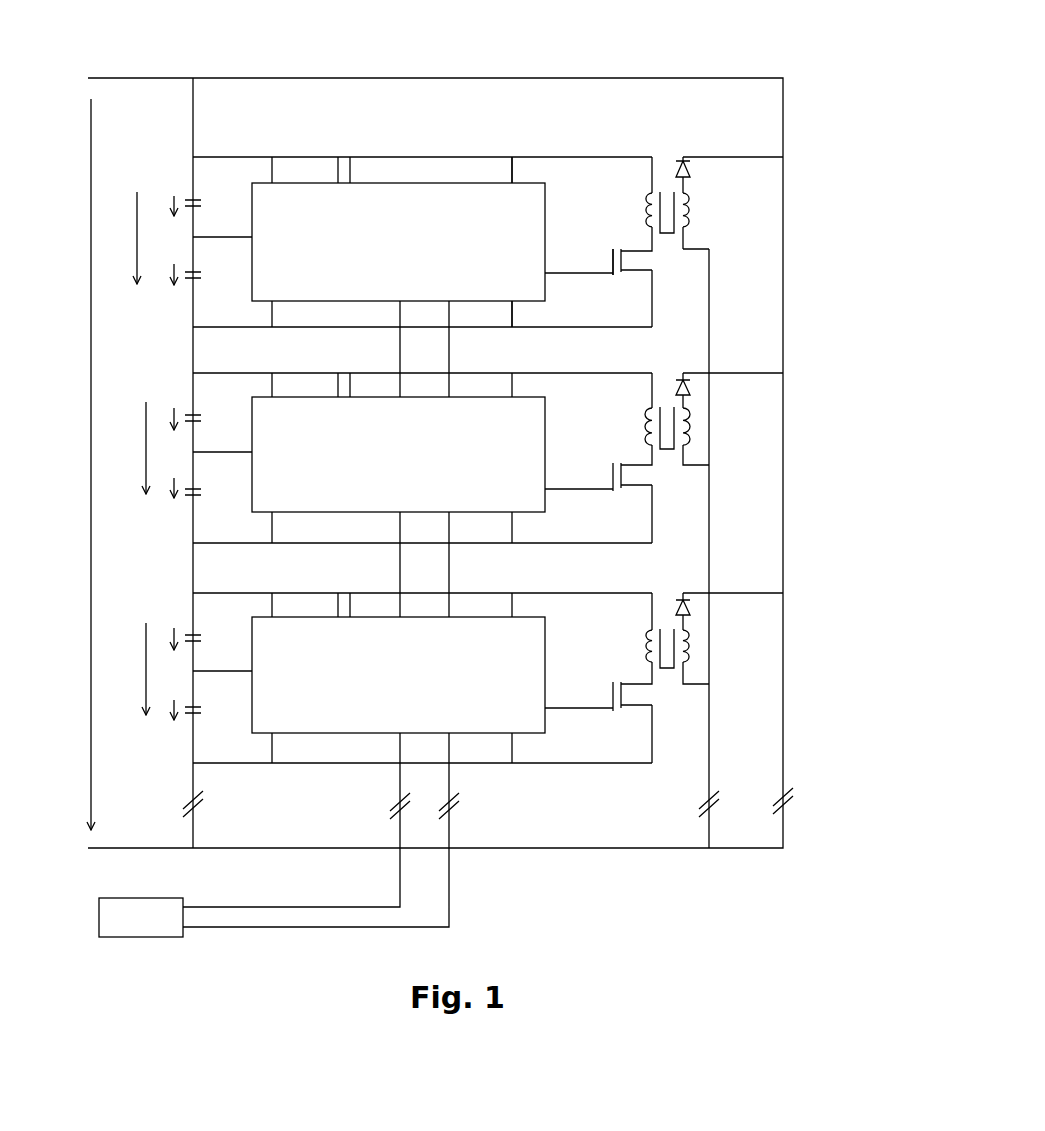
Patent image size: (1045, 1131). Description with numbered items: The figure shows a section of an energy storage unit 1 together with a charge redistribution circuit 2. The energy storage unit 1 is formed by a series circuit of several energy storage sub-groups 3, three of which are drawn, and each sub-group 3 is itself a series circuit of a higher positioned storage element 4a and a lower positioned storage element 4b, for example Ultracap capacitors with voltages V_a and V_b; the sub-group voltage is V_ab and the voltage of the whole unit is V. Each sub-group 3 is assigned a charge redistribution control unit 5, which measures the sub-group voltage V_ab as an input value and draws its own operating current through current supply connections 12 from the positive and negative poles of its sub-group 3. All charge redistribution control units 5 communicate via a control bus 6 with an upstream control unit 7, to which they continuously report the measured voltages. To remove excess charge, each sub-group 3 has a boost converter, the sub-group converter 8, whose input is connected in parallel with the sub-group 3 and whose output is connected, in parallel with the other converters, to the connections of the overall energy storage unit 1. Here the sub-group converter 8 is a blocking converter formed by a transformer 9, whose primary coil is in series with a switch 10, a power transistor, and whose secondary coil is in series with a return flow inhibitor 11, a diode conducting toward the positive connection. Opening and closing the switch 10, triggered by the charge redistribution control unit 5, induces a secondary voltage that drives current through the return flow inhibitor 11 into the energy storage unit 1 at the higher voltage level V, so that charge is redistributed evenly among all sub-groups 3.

The energy storage unit 1 is at (560, 922).
The charge redistribution circuit 2 is at (694, 68).
The energy storage sub-group 3 is at (160, 155).
The higher positioned storage element 4a is at (204, 422).
The lower positioned storage element 4b is at (205, 494).
The charge redistribution control unit 5 is at (398, 458).
The control bus 6 is at (446, 868).
The control unit 7 is at (141, 917).
The sub-group converter 8 is at (678, 300).
The transformer 9 is at (717, 210).
The switch 10 is at (613, 276).
The return flow inhibitor 11 is at (691, 170).
The current supply connections 12 is at (512, 160).